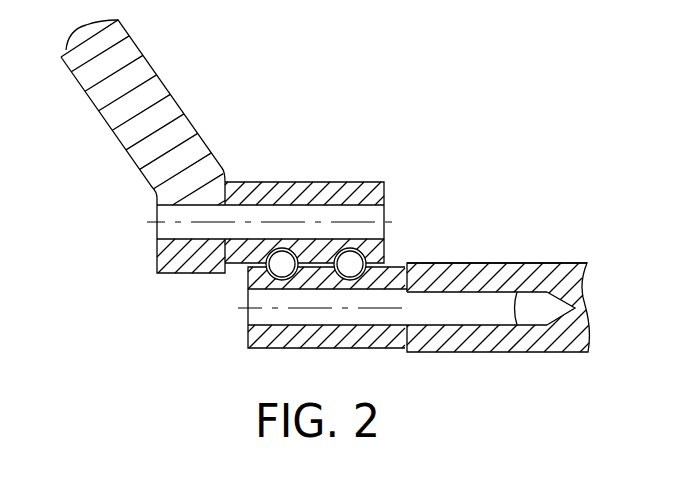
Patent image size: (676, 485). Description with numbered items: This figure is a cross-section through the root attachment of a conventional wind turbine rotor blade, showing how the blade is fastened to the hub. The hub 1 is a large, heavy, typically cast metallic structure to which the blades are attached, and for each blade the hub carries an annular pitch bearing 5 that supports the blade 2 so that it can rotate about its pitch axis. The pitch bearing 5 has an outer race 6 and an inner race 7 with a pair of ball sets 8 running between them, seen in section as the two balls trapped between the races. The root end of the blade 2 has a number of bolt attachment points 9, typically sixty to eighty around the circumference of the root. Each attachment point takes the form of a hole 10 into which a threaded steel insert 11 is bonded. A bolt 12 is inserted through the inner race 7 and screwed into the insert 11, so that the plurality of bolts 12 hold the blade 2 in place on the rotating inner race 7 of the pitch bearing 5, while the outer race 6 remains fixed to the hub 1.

The hub 1 is at (165, 82).
The blade 2 is at (538, 352).
The annular pitch bearing 5 is at (307, 182).
The outer race 6 is at (384, 190).
The inner race 7 is at (370, 348).
The ball sets 8 is at (281, 266).
The bolt attachment points 9 is at (488, 280).
The holes 10 is at (578, 302).
The threaded steel inserts 11 is at (437, 325).
The bolts 12 is at (250, 317).